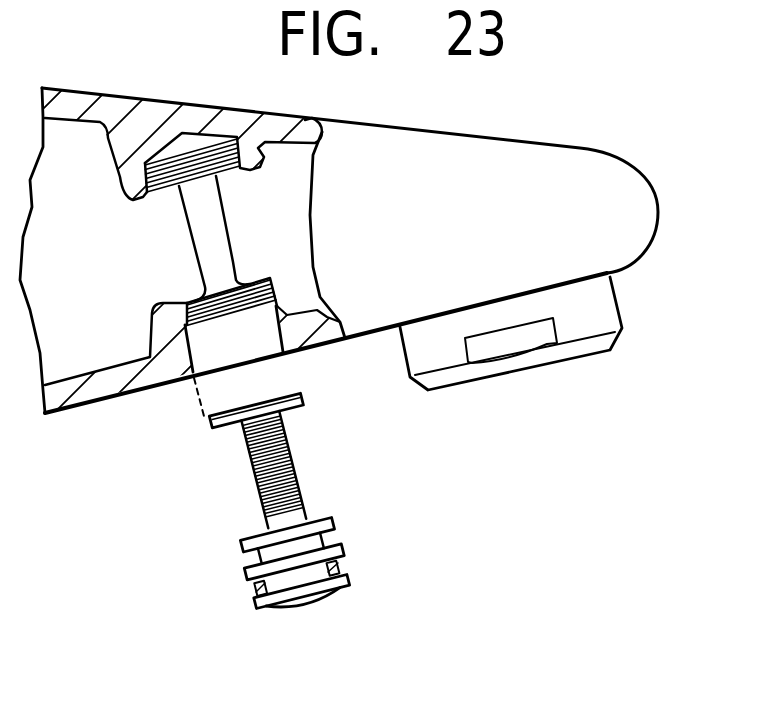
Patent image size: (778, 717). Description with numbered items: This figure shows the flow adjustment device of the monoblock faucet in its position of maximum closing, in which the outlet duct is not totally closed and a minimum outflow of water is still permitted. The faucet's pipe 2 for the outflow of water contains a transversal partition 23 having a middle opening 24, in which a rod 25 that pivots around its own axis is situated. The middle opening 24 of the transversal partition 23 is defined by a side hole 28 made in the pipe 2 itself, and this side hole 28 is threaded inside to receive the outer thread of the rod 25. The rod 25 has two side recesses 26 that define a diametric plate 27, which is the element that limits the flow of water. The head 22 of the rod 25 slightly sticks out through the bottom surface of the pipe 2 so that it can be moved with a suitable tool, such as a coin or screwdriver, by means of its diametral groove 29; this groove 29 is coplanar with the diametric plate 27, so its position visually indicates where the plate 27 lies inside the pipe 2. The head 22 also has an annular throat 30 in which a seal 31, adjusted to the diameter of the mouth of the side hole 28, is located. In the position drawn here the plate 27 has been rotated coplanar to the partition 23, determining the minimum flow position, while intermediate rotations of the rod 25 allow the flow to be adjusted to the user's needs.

The pipe 2 is at (630, 181).
The transversal partition 23 is at (203, 232).
The middle opening 24 is at (214, 282).
The side hole 28 is at (268, 343).
The rod 25 is at (278, 537).
The side recesses 26 is at (297, 415).
The diametric plate 27 is at (297, 486).
The annular throat 30 is at (313, 575).
The seal 31 is at (258, 587).
The head 22 is at (278, 597).
The diametral groove 29 is at (303, 603).